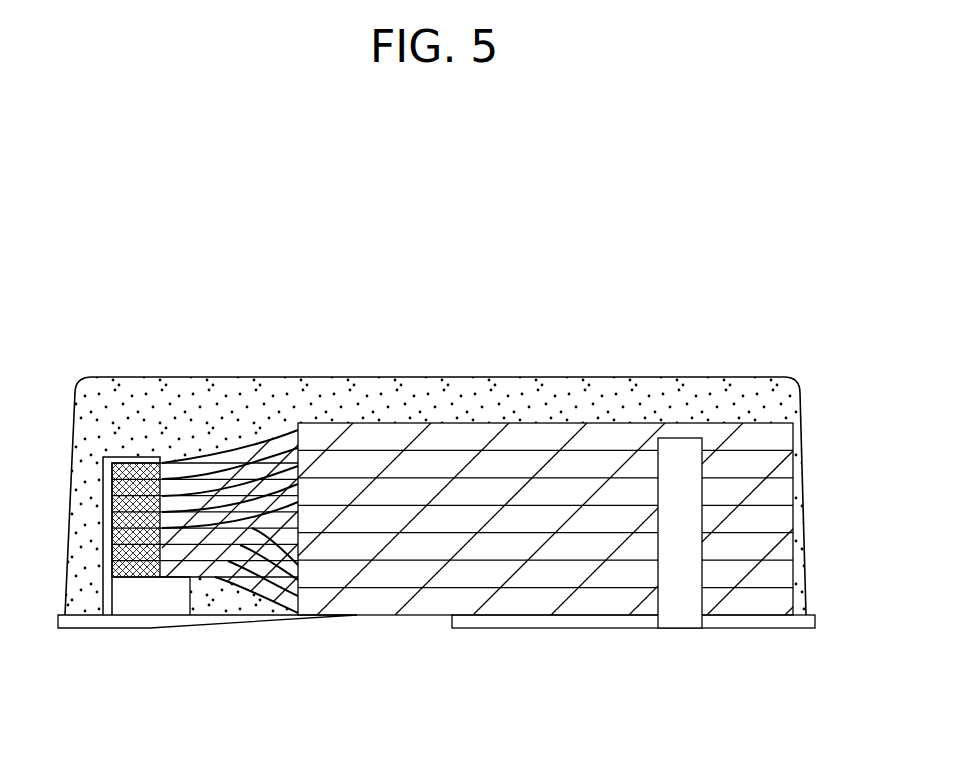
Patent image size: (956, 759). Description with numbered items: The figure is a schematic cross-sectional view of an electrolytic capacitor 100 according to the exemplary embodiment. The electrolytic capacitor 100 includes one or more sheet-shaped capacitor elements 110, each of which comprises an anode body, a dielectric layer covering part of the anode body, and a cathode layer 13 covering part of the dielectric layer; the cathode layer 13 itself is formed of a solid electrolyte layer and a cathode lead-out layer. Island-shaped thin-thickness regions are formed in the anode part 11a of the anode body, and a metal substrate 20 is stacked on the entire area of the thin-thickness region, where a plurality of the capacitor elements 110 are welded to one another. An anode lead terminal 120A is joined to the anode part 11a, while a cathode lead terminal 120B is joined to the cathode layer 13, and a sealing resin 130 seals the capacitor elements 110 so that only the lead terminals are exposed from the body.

The electrolytic capacitor 100 is at (457, 250).
The sealing resin 130 is at (352, 395).
The cathode layer 13 is at (528, 440).
The capacitor element 110 is at (787, 492).
The metal substrate 20 is at (108, 478).
The anode part 11a is at (200, 445).
The anode lead terminal 120A is at (130, 628).
The cathode lead terminal 120B is at (772, 628).